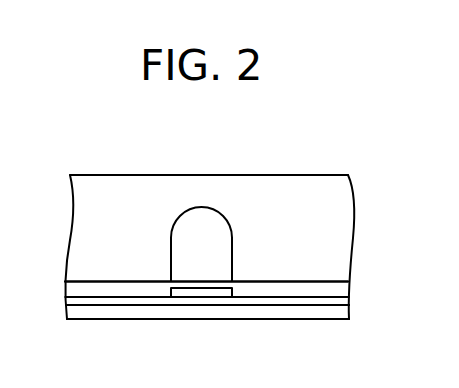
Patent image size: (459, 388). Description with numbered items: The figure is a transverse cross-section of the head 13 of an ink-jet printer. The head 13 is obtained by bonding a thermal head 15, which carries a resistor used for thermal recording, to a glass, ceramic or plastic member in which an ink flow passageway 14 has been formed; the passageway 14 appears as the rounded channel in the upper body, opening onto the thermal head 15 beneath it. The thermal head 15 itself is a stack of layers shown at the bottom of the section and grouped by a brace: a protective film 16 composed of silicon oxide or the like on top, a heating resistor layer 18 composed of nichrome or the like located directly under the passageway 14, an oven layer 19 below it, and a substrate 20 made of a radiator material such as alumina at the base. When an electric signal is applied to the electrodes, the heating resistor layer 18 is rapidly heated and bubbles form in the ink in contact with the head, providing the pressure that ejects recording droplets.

The head 13 is at (85, 175).
The ink flow passageway 14 is at (200, 207).
The thermal head 15 is at (358, 281).
The protective film 16 is at (289, 281).
The heating resistor layer 18 is at (209, 297).
The oven layer 19 is at (260, 305).
The substrate 20 is at (308, 320).